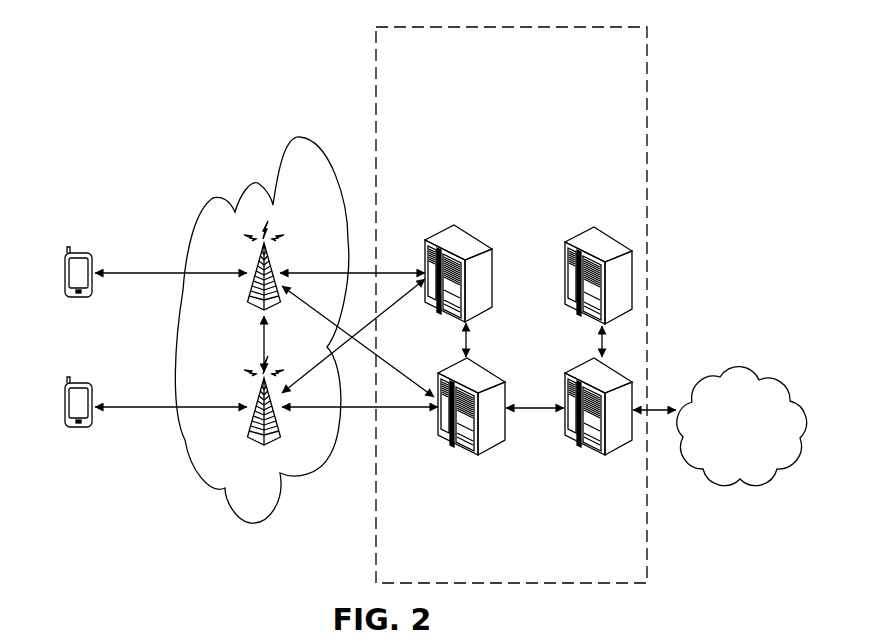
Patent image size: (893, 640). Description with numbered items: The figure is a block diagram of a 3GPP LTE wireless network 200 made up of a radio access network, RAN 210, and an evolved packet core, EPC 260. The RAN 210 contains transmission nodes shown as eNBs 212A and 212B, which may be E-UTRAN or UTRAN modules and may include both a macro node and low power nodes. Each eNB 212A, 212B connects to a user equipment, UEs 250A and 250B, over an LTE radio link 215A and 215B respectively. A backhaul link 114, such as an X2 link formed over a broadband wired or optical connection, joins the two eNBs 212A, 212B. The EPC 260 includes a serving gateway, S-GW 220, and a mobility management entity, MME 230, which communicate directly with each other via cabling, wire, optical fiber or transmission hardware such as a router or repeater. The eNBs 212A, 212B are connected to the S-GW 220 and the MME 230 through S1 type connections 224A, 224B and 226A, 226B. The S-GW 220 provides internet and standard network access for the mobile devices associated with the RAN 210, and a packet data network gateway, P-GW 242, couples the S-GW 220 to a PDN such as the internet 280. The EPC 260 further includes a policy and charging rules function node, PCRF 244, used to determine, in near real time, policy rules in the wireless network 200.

The wireless network 200 is at (268, 54).
The RAN 210 is at (294, 238).
The eNB 212A is at (252, 268).
The eNB 212B is at (282, 426).
The LTE radio link 215A is at (143, 277).
The LTE radio link 215B is at (143, 407).
The UE 250A is at (68, 252).
The UE 250B is at (88, 430).
The backhaul link 114 is at (265, 343).
The S1 type connection 224A is at (396, 272).
The S1 type connection 224B is at (400, 286).
The S1 type connection 226A is at (358, 342).
The S1 type connection 226B is at (398, 408).
The mobility management entity 230 is at (432, 238).
The policy and charging rules function node 244 is at (598, 241).
The serving gateway 220 is at (470, 458).
The packet data network gateway 242 is at (586, 455).
The evolved packet core 260 is at (553, 85).
The internet 280 is at (722, 448).